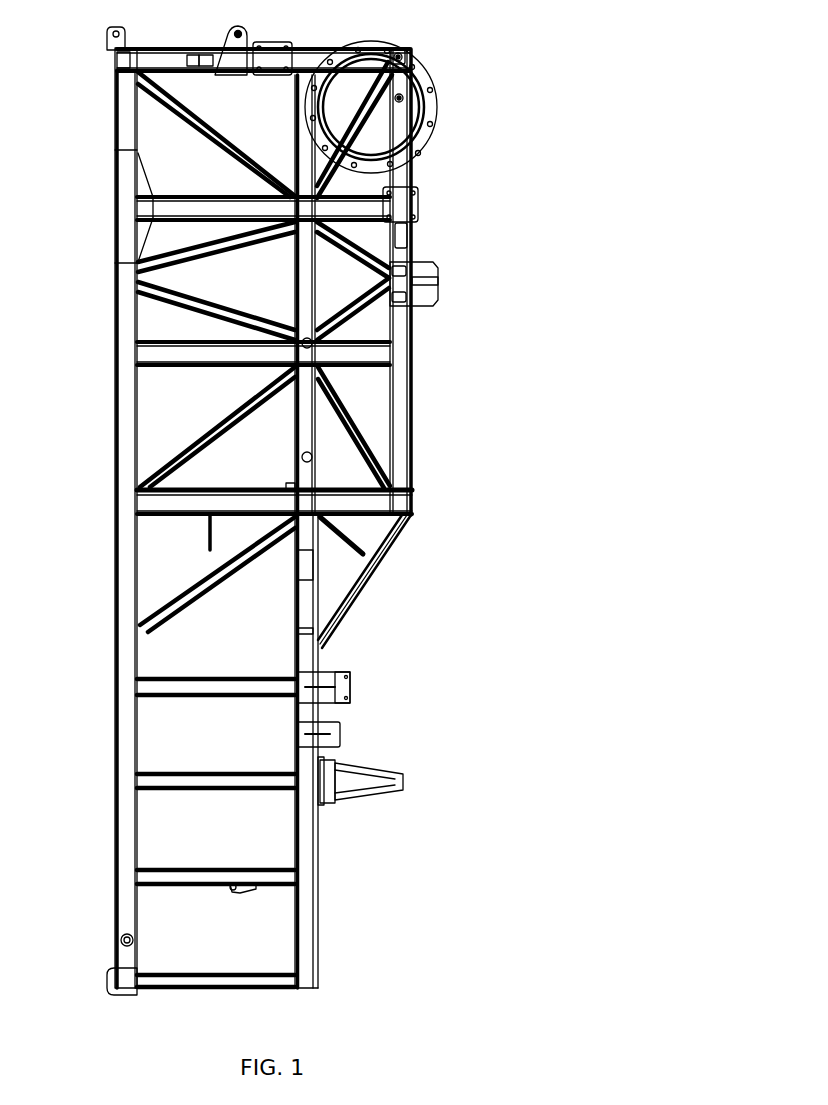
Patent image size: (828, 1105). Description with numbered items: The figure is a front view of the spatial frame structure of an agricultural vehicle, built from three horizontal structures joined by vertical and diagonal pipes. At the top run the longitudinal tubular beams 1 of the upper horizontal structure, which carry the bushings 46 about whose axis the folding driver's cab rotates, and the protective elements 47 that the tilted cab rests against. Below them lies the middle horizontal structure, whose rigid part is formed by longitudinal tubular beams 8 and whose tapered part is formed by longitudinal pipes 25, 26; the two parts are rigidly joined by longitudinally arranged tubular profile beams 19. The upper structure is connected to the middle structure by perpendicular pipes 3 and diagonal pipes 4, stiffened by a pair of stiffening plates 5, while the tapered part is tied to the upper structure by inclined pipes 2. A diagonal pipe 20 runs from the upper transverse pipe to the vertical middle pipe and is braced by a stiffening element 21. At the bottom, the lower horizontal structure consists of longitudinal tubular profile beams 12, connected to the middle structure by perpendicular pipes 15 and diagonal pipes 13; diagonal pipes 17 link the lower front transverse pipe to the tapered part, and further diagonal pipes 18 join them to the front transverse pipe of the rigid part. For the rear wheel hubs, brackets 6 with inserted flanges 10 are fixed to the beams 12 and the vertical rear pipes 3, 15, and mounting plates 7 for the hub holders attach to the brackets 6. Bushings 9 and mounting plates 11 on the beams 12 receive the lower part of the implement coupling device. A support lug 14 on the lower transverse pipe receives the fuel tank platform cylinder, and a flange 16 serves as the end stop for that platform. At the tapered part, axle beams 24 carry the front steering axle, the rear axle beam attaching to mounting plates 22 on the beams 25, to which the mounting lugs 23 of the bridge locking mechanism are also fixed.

The longitudinal beam 1 is at (124, 910).
The inclined pipe 2 is at (141, 688).
The perpendicular structural pipe 3 is at (156, 356).
The diagonal structural pipe 4 is at (160, 300).
The stiffening plate 5 is at (126, 220).
The bracket 6 is at (205, 60).
The mounting plate 7 is at (270, 44).
The longitudinal tubular beam 8 is at (305, 72).
The bushing 9 is at (397, 49).
The flange 10 is at (428, 84).
The mounting plate 11 is at (422, 278).
The longitudinal tubular profile beam 12 is at (404, 345).
The diagonal structural pipe 13 is at (352, 414).
The support lug 14 is at (392, 482).
The perpendicular structural pipe 15 is at (396, 502).
The flange 16 is at (288, 484).
The diagonal structural pipe 17 is at (406, 528).
The diagonal pipe 18 is at (362, 550).
The tubular profile beam 19 is at (312, 570).
The diagonal structural pipe 20 is at (206, 586).
The stiffening element 21 is at (209, 537).
The mounting plate 22 is at (352, 688).
The mounting lug 23 is at (342, 730).
The axle beam 24 is at (386, 790).
The longitudinal structural pipe 25 is at (316, 806).
The longitudinal structural pipe 26 is at (314, 928).
The bushing 46 is at (121, 945).
The protective element 47 is at (142, 992).